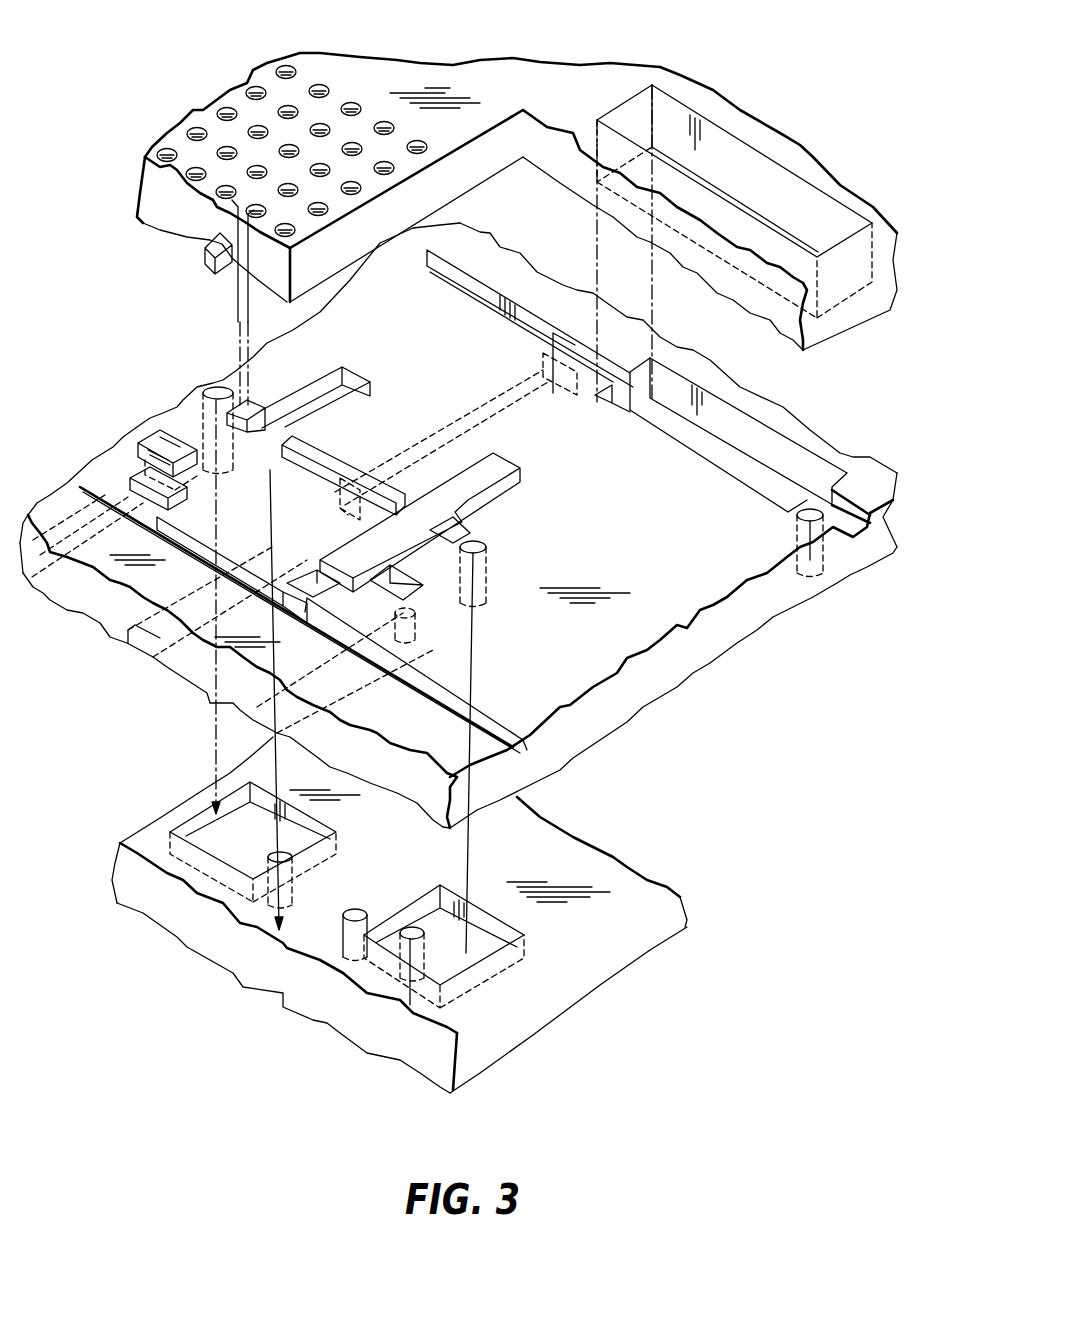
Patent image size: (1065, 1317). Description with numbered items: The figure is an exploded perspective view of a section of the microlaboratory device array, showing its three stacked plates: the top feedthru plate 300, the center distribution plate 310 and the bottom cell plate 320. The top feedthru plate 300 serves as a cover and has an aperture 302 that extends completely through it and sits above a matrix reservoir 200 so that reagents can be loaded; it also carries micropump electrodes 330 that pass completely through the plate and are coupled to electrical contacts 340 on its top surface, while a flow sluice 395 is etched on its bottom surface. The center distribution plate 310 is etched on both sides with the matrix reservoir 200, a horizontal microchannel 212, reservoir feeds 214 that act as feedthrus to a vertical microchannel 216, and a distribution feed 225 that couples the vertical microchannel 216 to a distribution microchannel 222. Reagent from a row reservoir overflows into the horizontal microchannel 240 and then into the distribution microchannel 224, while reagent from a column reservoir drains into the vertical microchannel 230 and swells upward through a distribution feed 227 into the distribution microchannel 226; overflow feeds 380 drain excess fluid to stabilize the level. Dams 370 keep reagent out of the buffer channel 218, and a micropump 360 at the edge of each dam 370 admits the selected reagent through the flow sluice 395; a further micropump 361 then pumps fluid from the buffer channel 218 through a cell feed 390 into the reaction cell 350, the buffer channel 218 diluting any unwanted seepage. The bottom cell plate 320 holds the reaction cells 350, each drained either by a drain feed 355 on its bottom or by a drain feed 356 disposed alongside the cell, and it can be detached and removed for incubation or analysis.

The matrix reservoir 200 is at (714, 457).
The horizontal microchannel 212 is at (481, 294).
The reservoir feed 214 is at (540, 362).
The vertical microchannel 216 is at (495, 425).
The buffer channel 218 is at (350, 386).
The distribution microchannel 222 is at (348, 468).
The distribution microchannel 224 is at (318, 598).
The distribution feed 225 is at (333, 503).
The distribution microchannel 226 is at (402, 580).
The distribution feed 227 is at (412, 620).
The vertical microchannel 230 is at (345, 685).
The horizontal microchannel 240 is at (487, 718).
The top feedthru plate 300 is at (574, 67).
The aperture 302 is at (752, 175).
The center distribution plate 310 is at (625, 710).
The bottom cell plate 320 is at (687, 920).
The micropump electrode 330 is at (231, 284).
The electrical contact 340 is at (320, 84).
The reaction cell 350 is at (420, 905).
The drain feed 355 is at (288, 890).
The drain feed 356 is at (340, 908).
The micropump 360 is at (185, 443).
The micropump 361 is at (253, 403).
The dam 370 is at (222, 392).
The overflow feed 380 is at (800, 514).
The cell feed 390 is at (210, 395).
The flow sluice 395 is at (215, 264).